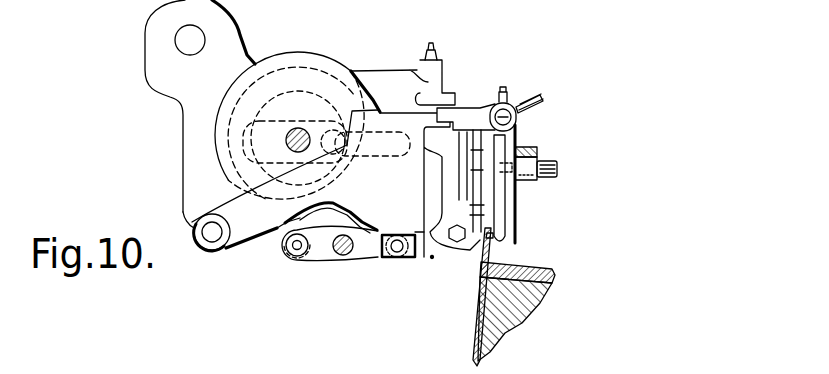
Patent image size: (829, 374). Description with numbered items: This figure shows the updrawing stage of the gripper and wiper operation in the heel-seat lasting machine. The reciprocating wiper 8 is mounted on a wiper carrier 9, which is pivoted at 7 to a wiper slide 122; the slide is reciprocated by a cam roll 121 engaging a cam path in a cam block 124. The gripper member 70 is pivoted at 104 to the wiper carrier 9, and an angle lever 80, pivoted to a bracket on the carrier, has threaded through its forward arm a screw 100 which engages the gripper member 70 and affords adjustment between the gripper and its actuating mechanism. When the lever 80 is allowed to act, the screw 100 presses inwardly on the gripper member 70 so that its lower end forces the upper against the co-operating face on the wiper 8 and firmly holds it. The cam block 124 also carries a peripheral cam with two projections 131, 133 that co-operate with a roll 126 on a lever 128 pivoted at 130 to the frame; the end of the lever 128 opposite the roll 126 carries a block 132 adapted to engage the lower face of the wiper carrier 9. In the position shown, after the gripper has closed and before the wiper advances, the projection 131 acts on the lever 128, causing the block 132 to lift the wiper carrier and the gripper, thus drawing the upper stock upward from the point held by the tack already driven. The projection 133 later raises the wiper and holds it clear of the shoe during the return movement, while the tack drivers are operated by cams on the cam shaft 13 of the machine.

The pivot 7 is at (213, 240).
The reciprocating wiper 8 is at (465, 252).
The wiper carrier 9 is at (428, 230).
The cam shaft 13 is at (286, 139).
The gripper member 70 is at (502, 217).
The angle lever 80 is at (538, 152).
The screw 100 is at (557, 168).
The pivot 104 is at (513, 118).
The cam roll 121 is at (330, 134).
The wiper slide 122 is at (385, 85).
The cam block 124 is at (347, 82).
The roll 126 is at (290, 237).
The lever 128 is at (322, 258).
The pivot 130 is at (342, 255).
The projection 131 is at (353, 207).
The block 132 is at (412, 257).
The projection 133 is at (318, 53).